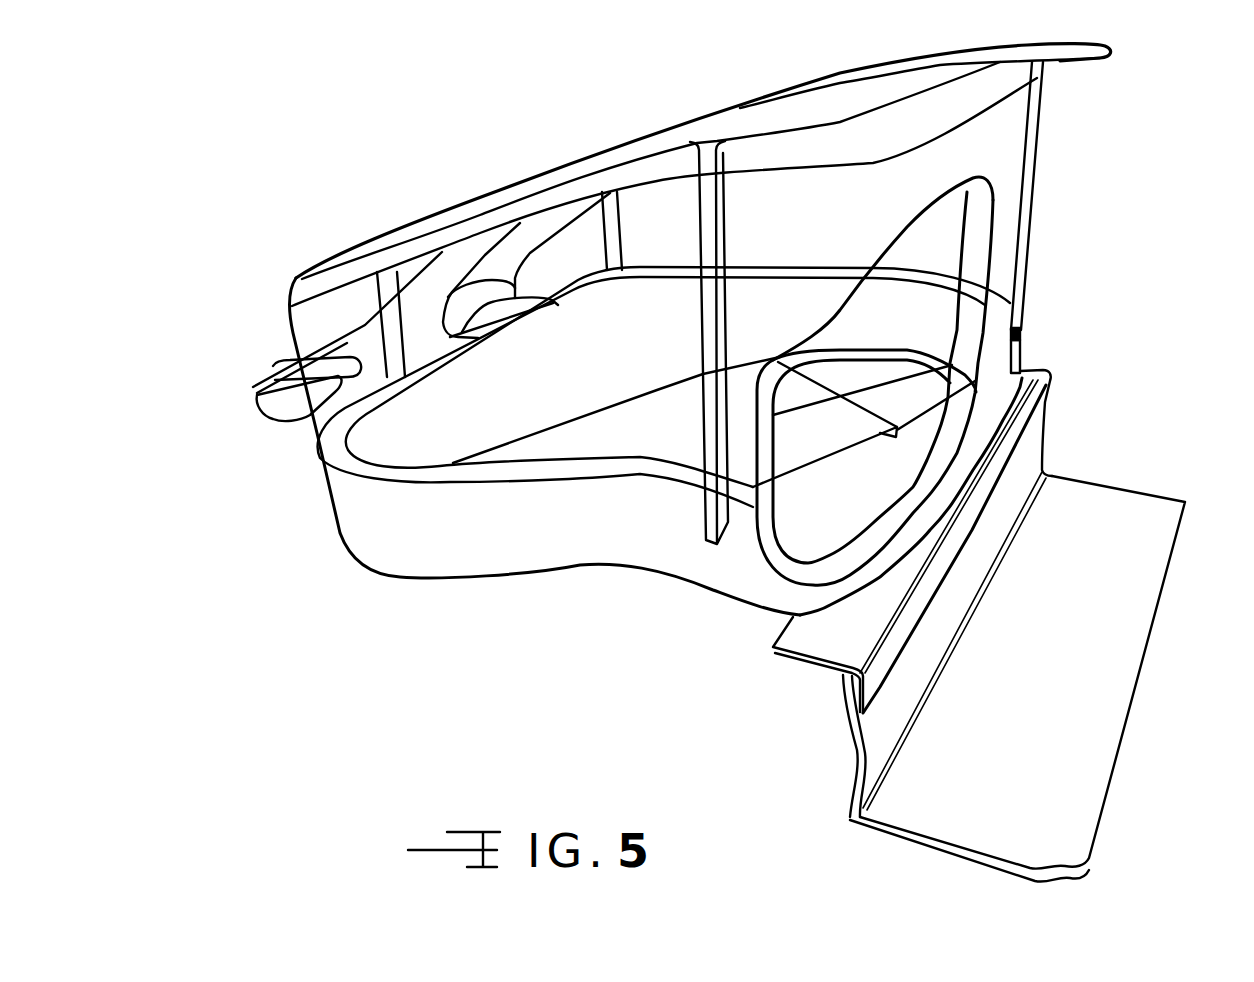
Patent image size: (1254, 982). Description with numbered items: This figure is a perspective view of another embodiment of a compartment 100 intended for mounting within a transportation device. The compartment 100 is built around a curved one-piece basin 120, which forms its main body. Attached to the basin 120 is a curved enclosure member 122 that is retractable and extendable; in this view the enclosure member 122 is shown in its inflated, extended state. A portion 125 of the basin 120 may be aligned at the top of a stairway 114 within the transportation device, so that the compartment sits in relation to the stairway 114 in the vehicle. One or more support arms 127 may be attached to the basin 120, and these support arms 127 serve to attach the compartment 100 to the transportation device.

The compartment 100 is at (665, 463).
The stairway 114 is at (907, 543).
The basin 120 is at (398, 578).
The enclosure member 122 is at (290, 423).
The portion 125 is at (813, 595).
The support arms 127 is at (253, 408).